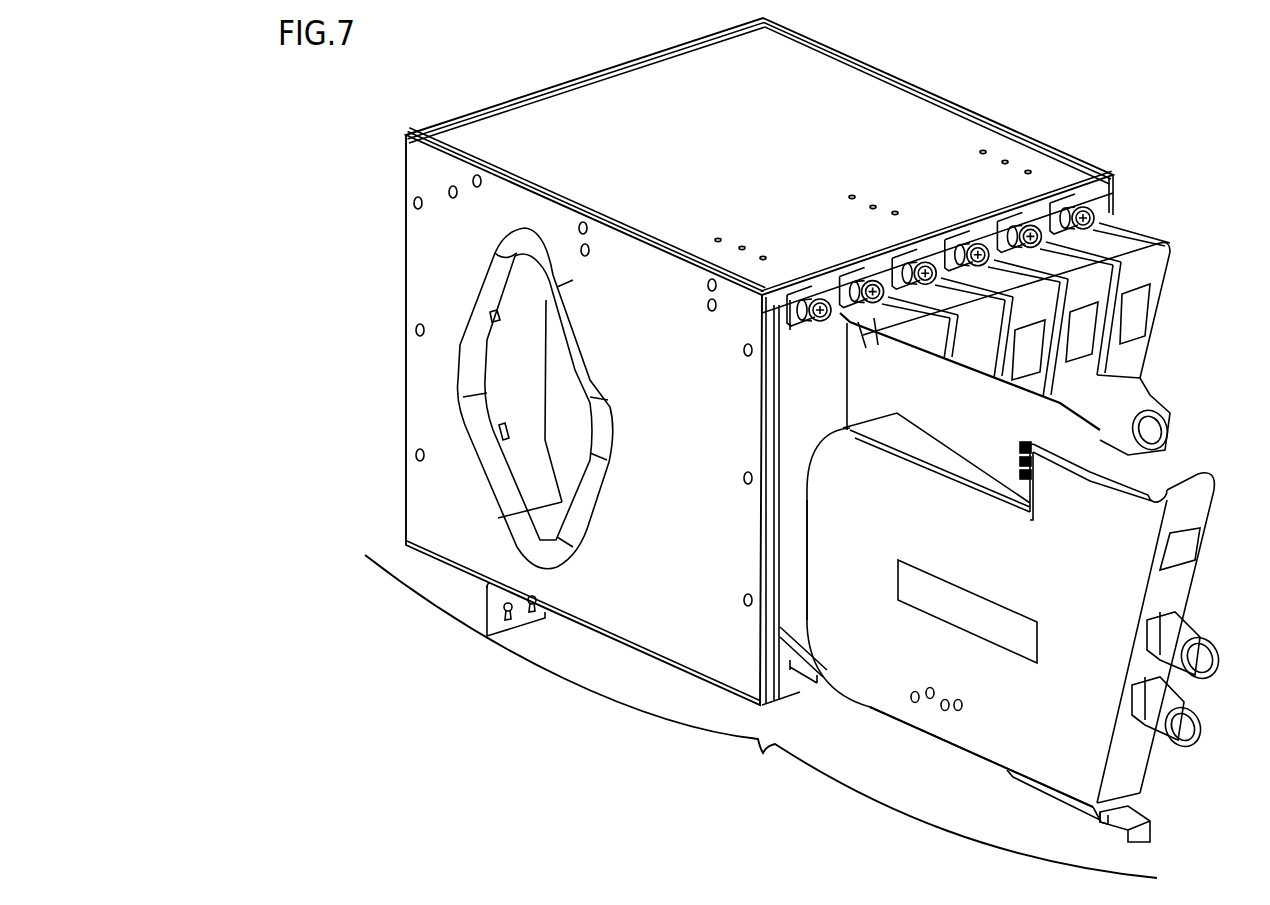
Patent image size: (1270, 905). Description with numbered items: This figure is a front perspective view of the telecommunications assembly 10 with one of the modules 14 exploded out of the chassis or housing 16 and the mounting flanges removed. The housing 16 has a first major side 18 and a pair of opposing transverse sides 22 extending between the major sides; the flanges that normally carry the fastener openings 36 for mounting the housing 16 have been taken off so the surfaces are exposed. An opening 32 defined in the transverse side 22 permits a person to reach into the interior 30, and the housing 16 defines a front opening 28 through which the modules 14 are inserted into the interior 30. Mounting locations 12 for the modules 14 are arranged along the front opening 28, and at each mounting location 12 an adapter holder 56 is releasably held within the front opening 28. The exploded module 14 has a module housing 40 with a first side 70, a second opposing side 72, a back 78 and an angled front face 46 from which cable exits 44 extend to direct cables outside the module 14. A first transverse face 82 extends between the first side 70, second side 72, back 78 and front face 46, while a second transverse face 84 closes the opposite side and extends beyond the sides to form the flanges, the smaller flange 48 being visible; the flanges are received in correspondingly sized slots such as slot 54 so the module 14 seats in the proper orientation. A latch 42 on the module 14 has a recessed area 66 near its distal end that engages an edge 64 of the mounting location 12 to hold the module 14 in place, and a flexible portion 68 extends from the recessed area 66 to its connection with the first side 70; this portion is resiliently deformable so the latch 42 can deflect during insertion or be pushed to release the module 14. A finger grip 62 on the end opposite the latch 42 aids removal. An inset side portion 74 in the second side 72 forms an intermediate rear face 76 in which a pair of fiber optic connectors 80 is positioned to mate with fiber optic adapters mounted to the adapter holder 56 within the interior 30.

The telecommunications assembly 10 is at (761, 716).
The mounting locations 12 is at (816, 287).
The modules 14 is at (1037, 332).
The chassis or housing 16 is at (586, 96).
The first major side 18 is at (728, 134).
The transverse sides 22 is at (676, 379).
The front opening 28 is at (780, 393).
The interior 30 is at (821, 361).
The openings 32 is at (507, 373).
The fastener openings 36 is at (520, 618).
The module housing 40 is at (1031, 586).
The latch 42 is at (1143, 829).
The cable exits 44 is at (1197, 720).
The front face 46 is at (1173, 588).
The flange 48 is at (876, 340).
The slot 54 is at (828, 680).
The adapter holder 56 is at (796, 300).
The finger grip 62 is at (1200, 484).
The edge 64 is at (798, 680).
The recessed area 66 is at (1107, 820).
The flexible portion 68 is at (1050, 798).
The first side 70 is at (968, 752).
The second side 72 is at (1087, 478).
The inset side portion 74 is at (928, 458).
The intermediate rear face 76 is at (1031, 494).
The back 78 is at (808, 538).
The fiber optic connectors 80 is at (1028, 438).
The first transverse face 82 is at (1098, 639).
The second transverse face 84 is at (864, 345).